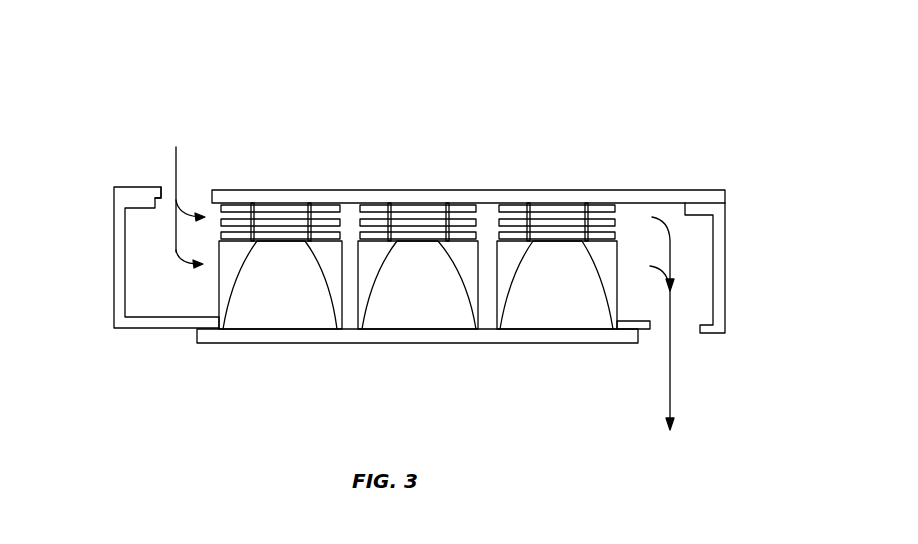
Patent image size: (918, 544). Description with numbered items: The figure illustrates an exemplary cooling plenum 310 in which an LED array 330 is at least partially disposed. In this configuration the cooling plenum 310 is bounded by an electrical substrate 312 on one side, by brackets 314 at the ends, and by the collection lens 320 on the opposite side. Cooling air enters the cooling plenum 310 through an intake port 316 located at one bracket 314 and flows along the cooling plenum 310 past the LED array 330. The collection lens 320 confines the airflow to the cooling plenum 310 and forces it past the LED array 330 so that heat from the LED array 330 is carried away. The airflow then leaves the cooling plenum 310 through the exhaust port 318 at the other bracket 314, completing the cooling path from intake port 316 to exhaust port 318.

The cooling plenum 310 is at (605, 119).
The electrical substrate 312 is at (488, 190).
The brackets 314 is at (113, 302).
The intake port 316 is at (169, 190).
The exhaust port 318 is at (658, 332).
The collection lens 320 is at (548, 343).
The LED array 330 is at (216, 297).